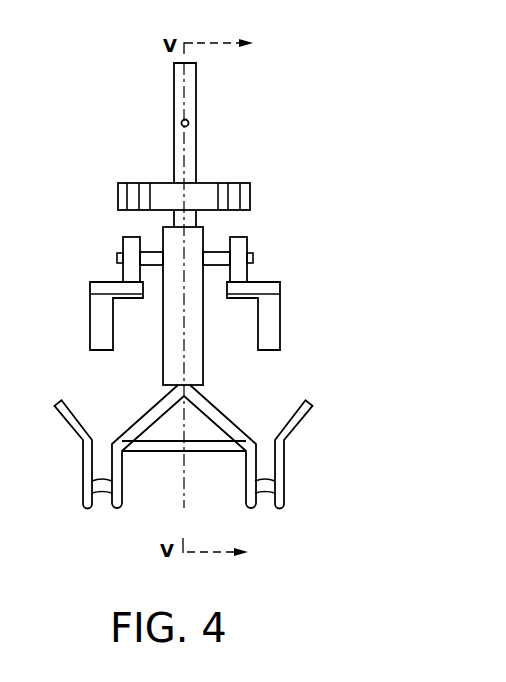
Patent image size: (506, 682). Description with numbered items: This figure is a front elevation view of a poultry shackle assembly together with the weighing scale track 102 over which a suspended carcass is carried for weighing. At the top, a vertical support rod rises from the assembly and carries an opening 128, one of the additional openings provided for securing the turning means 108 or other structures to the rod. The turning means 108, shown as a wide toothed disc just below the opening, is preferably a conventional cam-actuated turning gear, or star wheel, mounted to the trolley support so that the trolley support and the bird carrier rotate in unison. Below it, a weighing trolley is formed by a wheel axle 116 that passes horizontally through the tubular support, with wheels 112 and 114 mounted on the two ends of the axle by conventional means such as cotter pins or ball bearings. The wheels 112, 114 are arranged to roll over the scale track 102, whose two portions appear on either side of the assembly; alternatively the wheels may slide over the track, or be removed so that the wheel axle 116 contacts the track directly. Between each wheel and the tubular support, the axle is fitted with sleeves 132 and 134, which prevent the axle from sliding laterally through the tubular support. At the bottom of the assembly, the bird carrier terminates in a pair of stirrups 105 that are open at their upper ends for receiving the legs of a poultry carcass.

The opening 128 is at (190, 120).
The turning means 108 is at (163, 193).
The wheel 112 is at (130, 243).
The wheel 114 is at (245, 242).
The wheel axle 116 is at (115, 257).
The weighing scale track 102 is at (100, 282).
The sleeve 132 is at (157, 258).
The sleeve 134 is at (213, 258).
The stirrups 105 is at (83, 513).